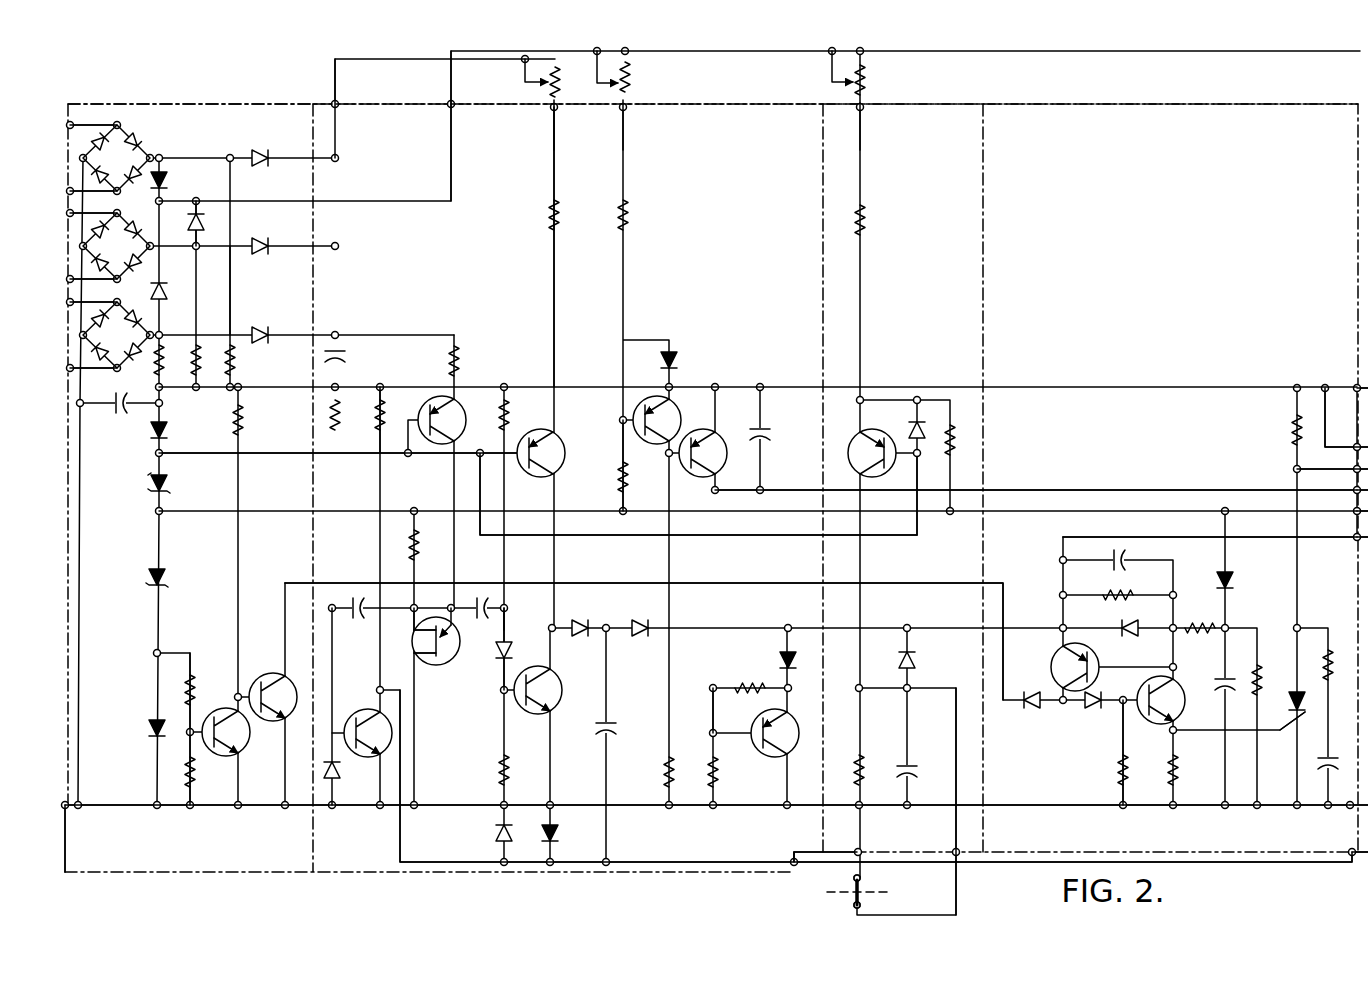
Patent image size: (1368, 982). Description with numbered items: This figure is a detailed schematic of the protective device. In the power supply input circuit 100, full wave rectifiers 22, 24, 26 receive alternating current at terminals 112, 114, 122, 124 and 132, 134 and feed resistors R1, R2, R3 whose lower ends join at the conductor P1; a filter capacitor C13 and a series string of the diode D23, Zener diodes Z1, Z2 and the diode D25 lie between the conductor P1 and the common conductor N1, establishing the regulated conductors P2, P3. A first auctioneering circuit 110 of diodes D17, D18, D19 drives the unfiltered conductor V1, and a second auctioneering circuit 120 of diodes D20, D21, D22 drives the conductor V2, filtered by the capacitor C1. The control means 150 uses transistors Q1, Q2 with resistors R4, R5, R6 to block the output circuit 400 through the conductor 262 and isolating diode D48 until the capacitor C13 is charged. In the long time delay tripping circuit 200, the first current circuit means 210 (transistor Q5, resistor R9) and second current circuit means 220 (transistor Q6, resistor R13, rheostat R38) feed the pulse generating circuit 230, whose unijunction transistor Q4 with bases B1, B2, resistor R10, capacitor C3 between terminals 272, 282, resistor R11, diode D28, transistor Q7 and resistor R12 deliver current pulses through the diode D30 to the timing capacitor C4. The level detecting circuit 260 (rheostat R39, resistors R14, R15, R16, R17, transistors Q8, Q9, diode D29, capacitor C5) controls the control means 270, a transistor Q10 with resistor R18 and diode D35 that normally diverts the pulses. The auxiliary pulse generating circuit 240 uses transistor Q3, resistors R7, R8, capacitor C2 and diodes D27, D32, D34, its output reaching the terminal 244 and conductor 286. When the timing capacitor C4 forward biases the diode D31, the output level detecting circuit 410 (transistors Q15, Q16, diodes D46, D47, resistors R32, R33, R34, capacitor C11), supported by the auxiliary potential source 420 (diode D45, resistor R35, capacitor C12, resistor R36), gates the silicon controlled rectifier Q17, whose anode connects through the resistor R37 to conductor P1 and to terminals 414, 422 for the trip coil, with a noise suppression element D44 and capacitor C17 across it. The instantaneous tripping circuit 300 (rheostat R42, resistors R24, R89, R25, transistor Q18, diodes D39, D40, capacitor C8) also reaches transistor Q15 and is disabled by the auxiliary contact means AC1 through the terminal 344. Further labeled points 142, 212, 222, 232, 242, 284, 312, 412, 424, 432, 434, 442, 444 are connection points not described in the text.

The power supply input circuit 100 is at (196, 105).
The first auctioneering circuit 110 is at (193, 195).
The second auctioneering circuit 120 is at (260, 290).
The terminal 112 is at (66, 125).
The terminal 114 is at (66, 191).
The terminal 122 is at (66, 215).
The terminal 124 is at (66, 280).
The terminal 132 is at (66, 302).
The terminal 134 is at (66, 368).
The common terminal 142 is at (62, 808).
The full wave rectifier 22 is at (105, 168).
The full wave rectifier 24 is at (105, 256).
The full wave rectifier 26 is at (105, 345).
The control means 150 is at (245, 765).
The long time delay tripping circuit 200 is at (734, 104).
The first current circuit means 210 is at (401, 482).
The supply node 212 is at (334, 104).
The second current circuit means 220 is at (508, 260).
The supply node 222 is at (450, 103).
The pulse generating circuit 230 is at (423, 730).
The divider node 232 is at (556, 108).
The auxiliary pulse generating circuit 240 is at (340, 678).
The divider node 242 is at (625, 108).
The terminal 244 is at (792, 860).
The level detecting circuit 260 is at (673, 535).
The conductor 262 is at (752, 583).
The control means 270 is at (718, 720).
The terminal 272 is at (418, 612).
The terminal 282 is at (508, 612).
The signal line 284 is at (1038, 490).
The conductor 286 is at (732, 860).
The instantaneous tripping circuit 300 is at (954, 104).
The supply node 312 is at (862, 108).
The terminal 344 is at (954, 851).
The output circuit 400 is at (1264, 104).
The output level detecting circuit 410 is at (1058, 755).
The output terminal 412 is at (1354, 386).
The terminal 414 is at (1354, 448).
The auxiliary potential source 420 is at (1245, 600).
The terminal 422 is at (1354, 470).
The output terminal 424 is at (1354, 492).
The output terminal 432 is at (1354, 513).
The output terminal 434 is at (1354, 538).
The output terminal 442 is at (1350, 808).
The output terminal 444 is at (1352, 852).
The variable voltage output conductor V1 is at (1183, 50).
The variable voltage output conductor V2 is at (406, 56).
The positive conductor P1 is at (484, 387).
The positive conductor P2 is at (295, 452).
The positive conductor P3 is at (295, 510).
The common conductor N1 is at (475, 805).
The auxiliary contact means AC1 is at (848, 882).
The UJT base one B1 is at (414, 631).
The UJT base two B2 is at (414, 649).
The diode D17 is at (168, 184).
The diode D18 is at (208, 221).
The diode D19 is at (158, 289).
The diode D20 is at (266, 146).
The diode D21 is at (266, 236).
The diode D22 is at (266, 326).
The forward connected diode D23 is at (164, 430).
The forward connected diode D25 is at (138, 732).
The diode D27 is at (342, 783).
The diode D28 is at (512, 648).
The diode D29 is at (680, 358).
The diode D30 is at (581, 621).
The diode D31 is at (640, 621).
The diode D32 is at (490, 836).
The diode D34 is at (558, 838).
The forward connected diode D35 is at (774, 656).
The diode D39 is at (908, 428).
The isolating diode D40 is at (898, 656).
The diode D44 is at (1336, 646).
The forward connected diode D45 is at (1236, 582).
The diode D46 is at (1130, 624).
The diode D47 is at (1096, 706).
The isolating diode D48 is at (1028, 706).
The first reversely poled Zener diode Z1 is at (164, 480).
The second reversely poled Zener diode Z2 is at (164, 579).
The resistor R1 is at (238, 358).
The resistor R2 is at (204, 358).
The resistor R3 is at (150, 375).
The collector load resistor R4 is at (246, 418).
The resistor R5 is at (182, 686).
The resistor R6 is at (182, 773).
The resistor R7 is at (340, 416).
The collector load resistor R8 is at (388, 416).
The resistor R9 is at (462, 370).
The resistor R10 is at (424, 550).
The resistor R11 is at (512, 418).
The shunt resistor R12 is at (520, 764).
The resistor R13 is at (544, 220).
The resistor R14 is at (616, 220).
The resistor R15 is at (612, 482).
The collector load resistor R16 is at (662, 765).
The collector load resistor R17 is at (706, 762).
The resistor R18 is at (740, 686).
The resistor R24 is at (870, 224).
The collector load resistor R25 is at (868, 760).
The resistor R32 is at (1134, 764).
The resistor R33 is at (1118, 592).
The resistor R34 is at (1182, 764).
The resistor R35 is at (1196, 624).
The resistor R36 is at (1264, 672).
The resistor R37 is at (1288, 428).
The rheostat R38 is at (542, 88).
The rheostat R39 is at (634, 92).
The rheostat R42 is at (866, 92).
The resistor R89 is at (958, 437).
The capacitor C1 is at (348, 357).
The capacitor C2 is at (370, 622).
The energy storing capacitor C3 is at (490, 618).
The timing capacitor C4 is at (616, 728).
The capacitor C5 is at (774, 438).
The capacitor C8 is at (918, 778).
The capacitor C11 is at (1128, 554).
The capacitor C12 is at (1202, 684).
The filter capacitor C13 is at (134, 417).
The capacitor C17 is at (1314, 762).
The NPN transistor Q1 is at (218, 713).
The NPN transistor Q2 is at (252, 680).
The NPN transistor Q3 is at (354, 714).
The unijunction transistor Q4 is at (448, 668).
The PNP transistor Q5 is at (466, 414).
The PNP transistor Q6 is at (562, 446).
The NPN transistor Q7 is at (560, 683).
The PNP transistor Q8 is at (679, 416).
The PNP transistor Q9 is at (719, 434).
The PNP transistor Q10 is at (782, 756).
The PNP transistor Q15 is at (1053, 658).
The NPN transistor Q16 is at (1148, 684).
The silicon controlled rectifier Q17 is at (1301, 716).
The PNP transistor Q18 is at (846, 448).